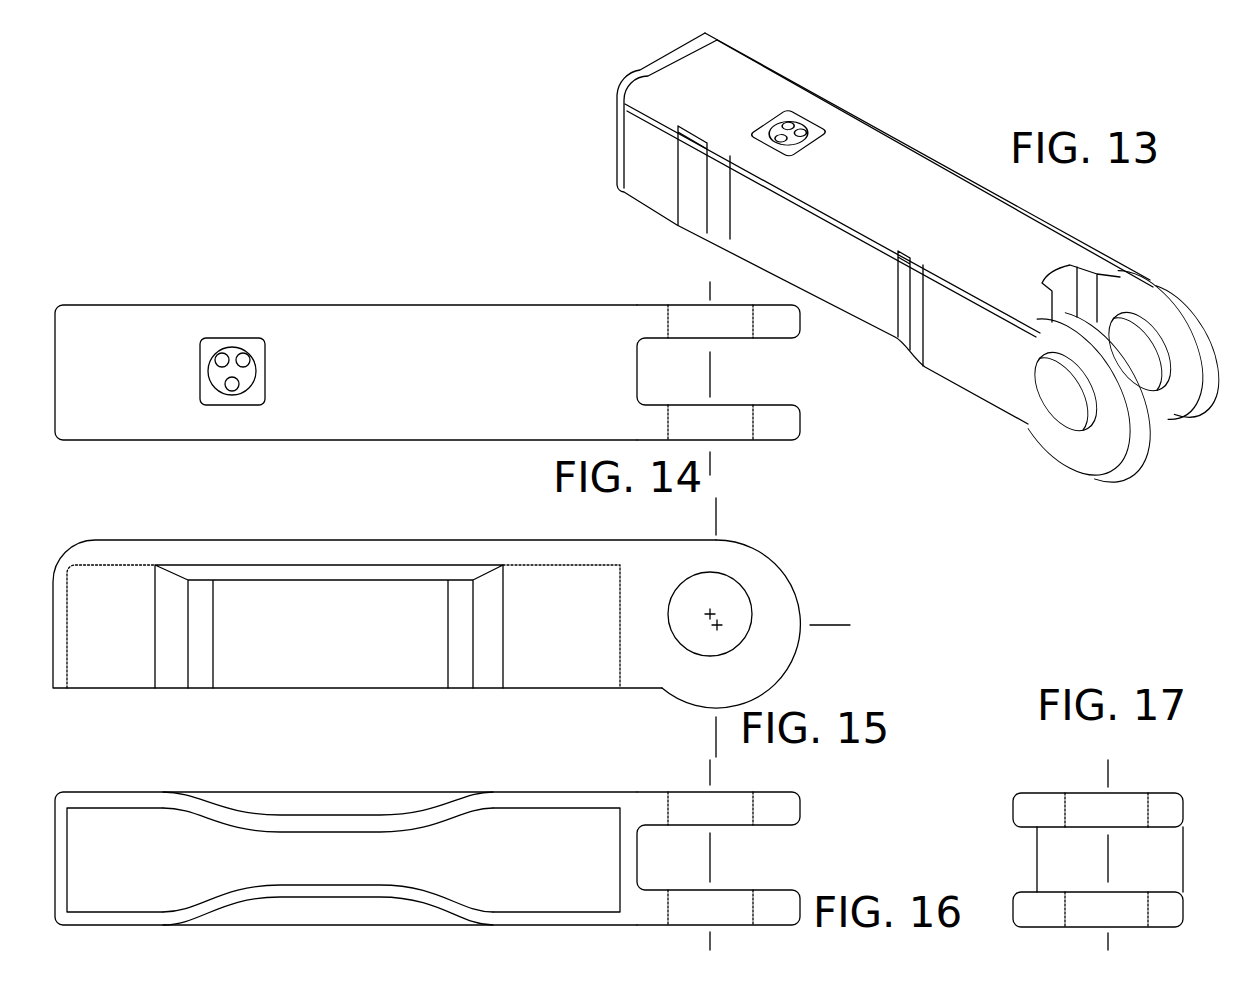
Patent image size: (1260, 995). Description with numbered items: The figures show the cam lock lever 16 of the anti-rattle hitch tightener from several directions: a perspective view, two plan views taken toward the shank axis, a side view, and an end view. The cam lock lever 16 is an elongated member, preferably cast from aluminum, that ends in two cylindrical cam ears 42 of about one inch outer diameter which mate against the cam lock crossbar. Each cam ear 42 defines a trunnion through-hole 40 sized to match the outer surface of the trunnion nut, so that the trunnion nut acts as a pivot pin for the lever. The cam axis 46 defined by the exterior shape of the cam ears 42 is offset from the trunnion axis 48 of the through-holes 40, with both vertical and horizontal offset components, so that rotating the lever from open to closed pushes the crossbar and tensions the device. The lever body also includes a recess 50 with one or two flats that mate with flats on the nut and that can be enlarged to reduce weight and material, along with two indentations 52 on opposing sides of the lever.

In FIG. 13, the cam lock lever 16 is at (848, 108).
In FIG. 14, the cam lock lever 16 is at (372, 318).
In FIG. 15, the cam lock lever 16 is at (297, 548).
In FIG. 16, the cam lock lever 16 is at (554, 793).
In FIG. 17, the cam lock lever 16 is at (1038, 790).
In FIG. 13, the trunnion through-hole 40 is at (1068, 398).
In FIG. 14, the trunnion through-hole 40 is at (672, 430).
In FIG. 15, the trunnion through-hole 40 is at (723, 588).
In FIG. 16, the trunnion through-hole 40 is at (668, 907).
In FIG. 17, the trunnion through-hole 40 is at (1073, 805).
In FIG. 13, the cam ears 42 is at (1098, 462).
In FIG. 14, the cam ears 42 is at (762, 312).
In FIG. 15, the cam ears 42 is at (785, 650).
In FIG. 16, the cam ears 42 is at (783, 805).
In FIG. 17, the cam ears 42 is at (1020, 800).
In FIG. 15, the cam axis 46 is at (718, 624).
In FIG. 14, the trunnion axis 48 is at (712, 385).
In FIG. 15, the trunnion axis 48 is at (707, 611).
In FIG. 16, the trunnion axis 48 is at (712, 873).
In FIG. 17, the trunnion axis 48 is at (1107, 862).
In FIG. 15, the recess 50 is at (67, 635).
In FIG. 16, the recess 50 is at (100, 828).
In FIG. 13, the indentations 52 is at (760, 238).
In FIG. 15, the indentations 52 is at (305, 662).
In FIG. 16, the indentations 52 is at (242, 915).